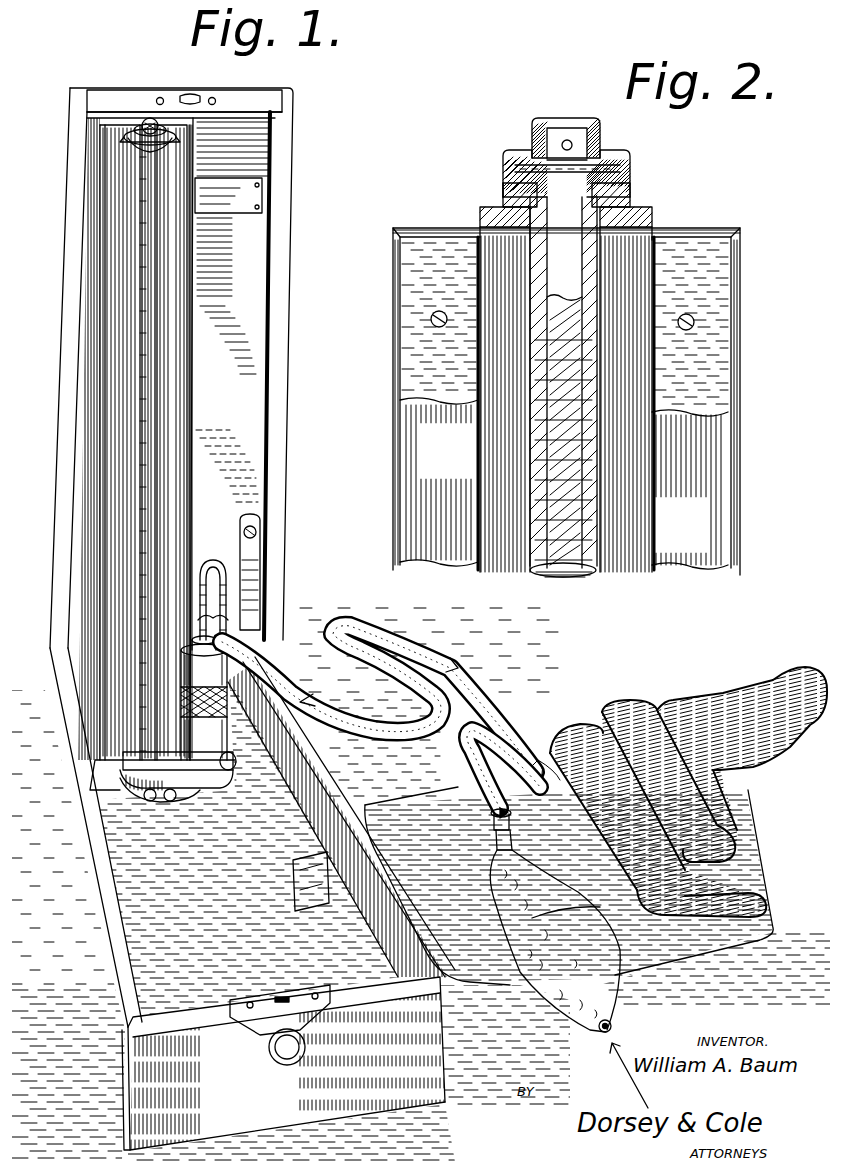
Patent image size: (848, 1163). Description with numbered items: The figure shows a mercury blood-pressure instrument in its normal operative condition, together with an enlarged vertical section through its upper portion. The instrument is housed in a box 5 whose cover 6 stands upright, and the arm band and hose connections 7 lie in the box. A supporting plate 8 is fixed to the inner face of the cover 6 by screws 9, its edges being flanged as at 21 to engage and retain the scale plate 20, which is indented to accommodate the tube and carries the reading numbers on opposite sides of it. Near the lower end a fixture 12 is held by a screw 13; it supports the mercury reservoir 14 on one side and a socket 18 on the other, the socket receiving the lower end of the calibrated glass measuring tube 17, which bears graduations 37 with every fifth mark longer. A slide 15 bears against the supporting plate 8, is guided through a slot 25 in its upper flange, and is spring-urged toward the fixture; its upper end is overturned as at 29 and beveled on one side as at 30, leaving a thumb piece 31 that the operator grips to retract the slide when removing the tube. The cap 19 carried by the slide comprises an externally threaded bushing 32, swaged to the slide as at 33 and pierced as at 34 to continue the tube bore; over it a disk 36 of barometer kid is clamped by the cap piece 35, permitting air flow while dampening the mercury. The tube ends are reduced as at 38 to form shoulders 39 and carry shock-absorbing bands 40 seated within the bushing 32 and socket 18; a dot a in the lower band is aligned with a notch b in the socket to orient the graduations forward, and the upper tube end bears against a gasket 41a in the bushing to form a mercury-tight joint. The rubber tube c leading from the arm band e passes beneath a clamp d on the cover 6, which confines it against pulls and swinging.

In FIG. 1, the box 5 is at (70, 912).
In FIG. 1, the cover 6 is at (257, 163).
In FIG. 1, the arm band and hose connections 7 is at (573, 740).
In FIG. 2, the supporting plate 8 is at (708, 305).
In FIG. 2, the screws 9 is at (697, 327).
In FIG. 1, the fixture 12 is at (150, 800).
In FIG. 1, the screw 13 is at (170, 800).
In FIG. 1, the mercury reservoir 14 is at (252, 654).
In FIG. 2, the slide 15 is at (495, 380).
In FIG. 1, the measuring tube 17 is at (153, 353).
In FIG. 2, the measuring tube 17 is at (673, 270).
In FIG. 1, the socket 18 is at (130, 775).
In FIG. 1, the cap 19 is at (148, 124).
In FIG. 2, the cap 19 is at (633, 172).
In FIG. 1, the scale plate 20 is at (173, 383).
In FIG. 2, the scale plate 20 is at (670, 427).
In FIG. 1, the flanged edges 21 is at (190, 418).
In FIG. 2, the slot 25 is at (680, 229).
In FIG. 2, the overturned upper end of the slide 29 is at (653, 220).
In FIG. 1, the beveled side 30 is at (195, 135).
In FIG. 1, the thumb piece 31 is at (135, 142).
In FIG. 2, the bushing 32 is at (623, 203).
In FIG. 2, the swaged or riveted portion 33 is at (653, 227).
In FIG. 2, the pierced opening 34 is at (640, 128).
In FIG. 2, the cap piece 35 is at (570, 177).
In FIG. 2, the disk 36 is at (557, 158).
In FIG. 2, the graduations 37 is at (560, 432).
In FIG. 2, the reduced ends 38 is at (503, 200).
In FIG. 2, the shoulders 39 is at (480, 237).
In FIG. 1, the shock-absorbing bands 40 is at (153, 757).
In FIG. 2, the shock-absorbing bands 40 is at (503, 183).
In FIG. 2, the gasket 41a is at (570, 172).
In FIG. 1, the dot a is at (217, 568).
In FIG. 1, the notch b is at (128, 782).
In FIG. 1, the rubber tube c is at (432, 803).
In FIG. 1, the clamp d is at (247, 605).
In FIG. 1, the arm band e is at (543, 881).